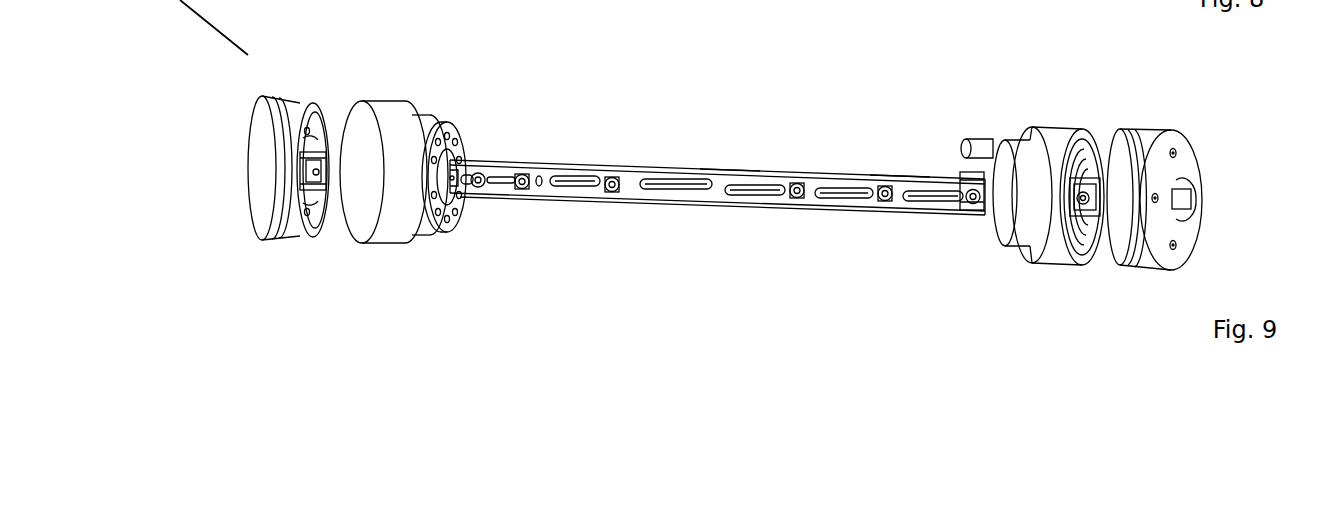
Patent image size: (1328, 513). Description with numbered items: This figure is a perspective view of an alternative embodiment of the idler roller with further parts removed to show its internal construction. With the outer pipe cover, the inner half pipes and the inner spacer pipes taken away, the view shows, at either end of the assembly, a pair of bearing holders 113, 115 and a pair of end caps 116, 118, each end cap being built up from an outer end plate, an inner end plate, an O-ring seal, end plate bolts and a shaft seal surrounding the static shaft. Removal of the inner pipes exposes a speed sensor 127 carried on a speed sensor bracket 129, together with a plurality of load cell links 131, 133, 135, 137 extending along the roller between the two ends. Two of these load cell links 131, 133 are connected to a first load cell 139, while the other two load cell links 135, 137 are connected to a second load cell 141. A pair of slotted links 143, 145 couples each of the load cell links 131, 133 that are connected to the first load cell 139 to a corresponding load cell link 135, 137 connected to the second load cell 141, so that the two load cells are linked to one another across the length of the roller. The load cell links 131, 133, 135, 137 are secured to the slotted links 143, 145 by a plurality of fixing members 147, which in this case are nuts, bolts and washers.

The bearing holder 113 is at (377, 100).
The bearing holder 115 is at (1080, 148).
The end cap 116 is at (250, 230).
The end cap 118 is at (1213, 172).
The speed sensor 127 is at (977, 148).
The speed sensor bracket 129 is at (977, 172).
The load cell link 131 is at (450, 157).
The load cell link 133 is at (447, 184).
The load cell link 135 is at (900, 177).
The load cell link 137 is at (863, 197).
The first load cell 139 is at (316, 188).
The second load cell 141 is at (1097, 215).
The slotted link 143 is at (731, 167).
The slotted link 145 is at (714, 192).
The fixing members 147 is at (530, 175).